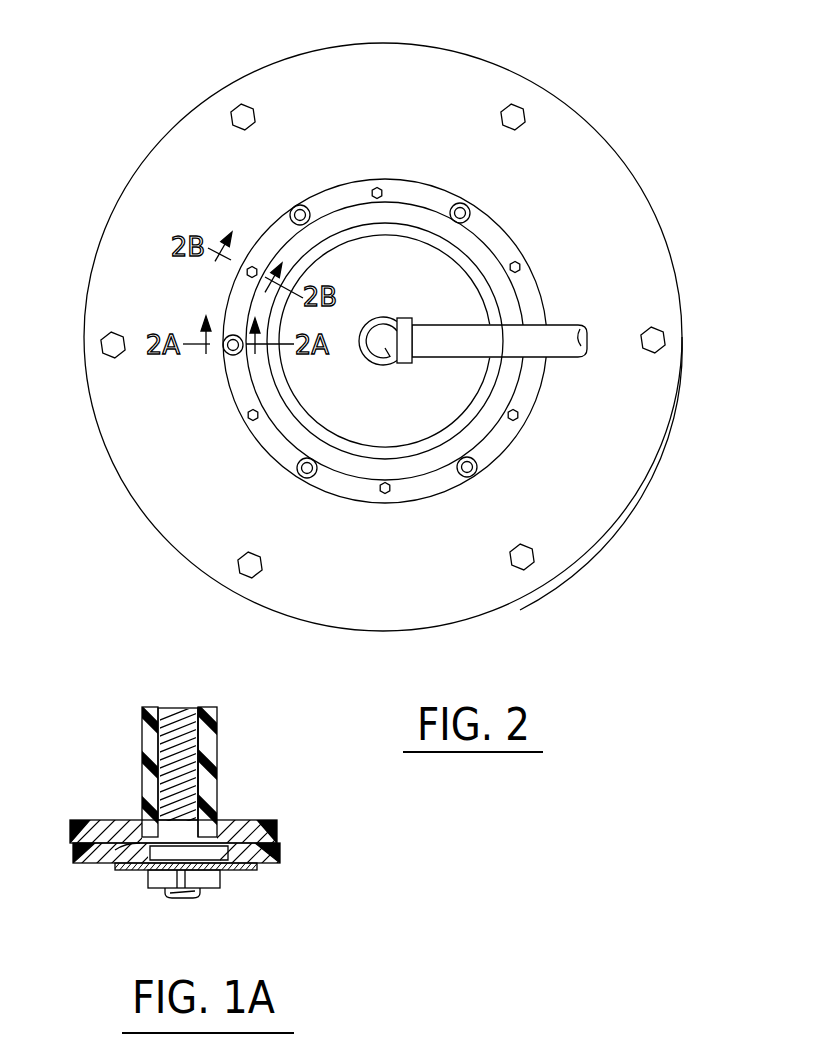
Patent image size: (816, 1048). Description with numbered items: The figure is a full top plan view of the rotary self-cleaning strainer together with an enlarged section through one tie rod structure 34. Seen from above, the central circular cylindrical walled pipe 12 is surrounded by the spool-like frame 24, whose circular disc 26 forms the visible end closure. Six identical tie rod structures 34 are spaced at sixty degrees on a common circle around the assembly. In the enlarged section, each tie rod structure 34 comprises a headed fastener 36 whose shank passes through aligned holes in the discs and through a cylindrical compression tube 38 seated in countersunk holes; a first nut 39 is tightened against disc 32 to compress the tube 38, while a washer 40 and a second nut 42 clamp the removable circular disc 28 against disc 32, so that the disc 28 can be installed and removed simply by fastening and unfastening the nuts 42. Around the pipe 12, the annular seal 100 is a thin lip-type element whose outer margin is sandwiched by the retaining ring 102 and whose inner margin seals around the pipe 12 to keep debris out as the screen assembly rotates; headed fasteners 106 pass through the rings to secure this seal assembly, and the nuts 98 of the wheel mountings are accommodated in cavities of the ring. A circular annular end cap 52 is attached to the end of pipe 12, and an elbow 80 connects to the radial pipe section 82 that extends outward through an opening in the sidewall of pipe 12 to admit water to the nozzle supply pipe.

In FIG. 2, the spool-like frame 24 is at (647, 198).
In FIG. 2, the circular disc 26 is at (667, 430).
In FIG. 2, the tie rod structure 34 is at (248, 106).
In FIG. 1A, the tie rod structure 34 is at (213, 707).
In FIG. 2, the headed fastener 106 is at (380, 187).
In FIG. 2, the nut 98 is at (300, 205).
In FIG. 2, the annular seal 100 is at (343, 222).
In FIG. 2, the retaining ring 102 is at (422, 193).
In FIG. 2, the circular cylindrical walled pipe 12 is at (458, 250).
In FIG. 2, the circular annular end cap 52 is at (385, 277).
In FIG. 2, the elbow 80 is at (365, 361).
In FIG. 2, the radial pipe section 82 is at (453, 352).
In FIG. 1A, the headed fastener 36 is at (165, 733).
In FIG. 1A, the cylindrical compression tube 38 is at (210, 752).
In FIG. 1A, the disc 32 is at (273, 832).
In FIG. 1A, the circular disc 28 is at (280, 850).
In FIG. 1A, the first nut 39 is at (113, 856).
In FIG. 1A, the washer 40 is at (257, 867).
In FIG. 1A, the second nut 42 is at (222, 879).